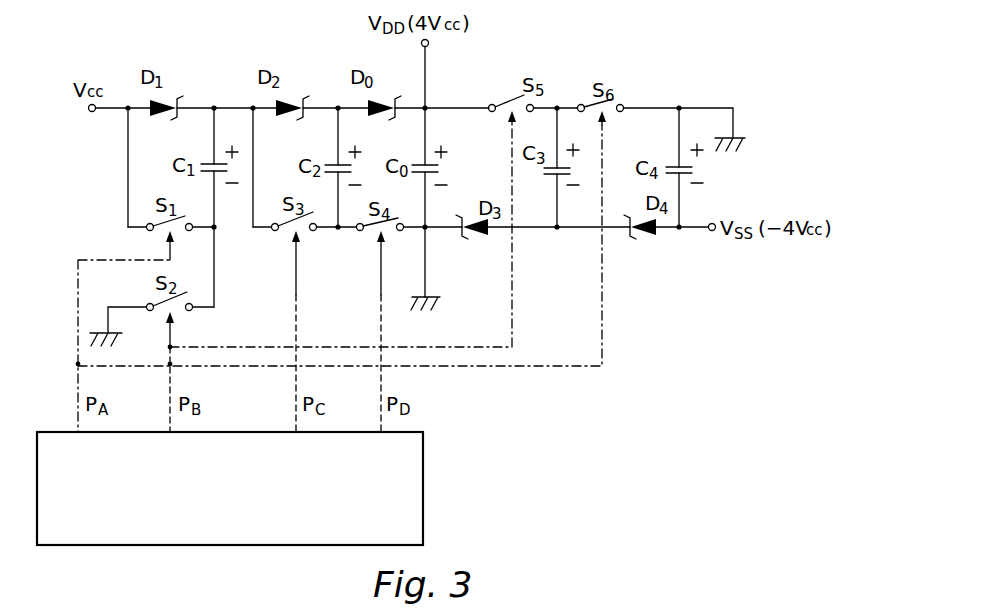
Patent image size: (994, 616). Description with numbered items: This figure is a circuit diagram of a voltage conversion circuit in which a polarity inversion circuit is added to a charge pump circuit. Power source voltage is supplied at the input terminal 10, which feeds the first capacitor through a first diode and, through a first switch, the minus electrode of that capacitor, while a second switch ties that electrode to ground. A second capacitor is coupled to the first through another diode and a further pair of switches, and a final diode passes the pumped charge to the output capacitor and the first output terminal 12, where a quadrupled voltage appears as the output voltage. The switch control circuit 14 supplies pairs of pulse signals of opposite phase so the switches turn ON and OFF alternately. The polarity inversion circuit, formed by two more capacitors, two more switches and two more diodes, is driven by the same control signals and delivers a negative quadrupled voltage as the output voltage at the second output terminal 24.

The input terminal 10 is at (90, 112).
The first output terminal 12 is at (428, 46).
The switch control circuit 14 is at (403, 507).
The second output terminal 24 is at (712, 231).